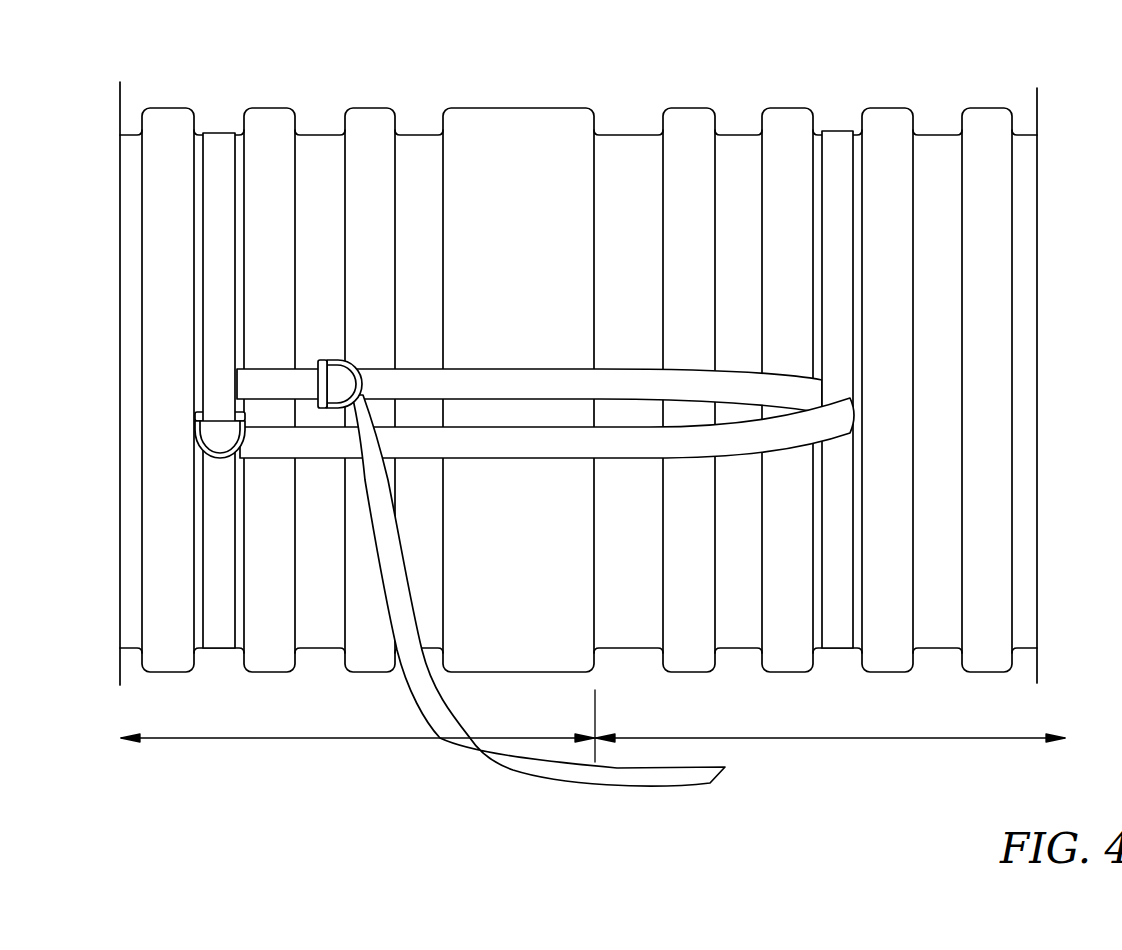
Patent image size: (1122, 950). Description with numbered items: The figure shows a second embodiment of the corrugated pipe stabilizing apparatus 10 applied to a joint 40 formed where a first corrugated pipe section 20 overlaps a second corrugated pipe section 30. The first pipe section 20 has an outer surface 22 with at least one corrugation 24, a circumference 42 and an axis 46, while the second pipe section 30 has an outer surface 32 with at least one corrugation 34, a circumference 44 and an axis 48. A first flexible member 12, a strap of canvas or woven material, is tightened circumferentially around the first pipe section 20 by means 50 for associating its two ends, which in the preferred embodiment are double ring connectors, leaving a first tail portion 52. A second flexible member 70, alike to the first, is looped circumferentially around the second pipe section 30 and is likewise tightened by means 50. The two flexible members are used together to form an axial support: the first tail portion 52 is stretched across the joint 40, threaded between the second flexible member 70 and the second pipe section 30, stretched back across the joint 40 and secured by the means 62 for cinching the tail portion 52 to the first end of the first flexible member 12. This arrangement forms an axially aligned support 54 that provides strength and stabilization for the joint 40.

The corrugated pipe stabilizing apparatus 10 is at (1002, 72).
The first flexible member 12 is at (218, 130).
The first corrugated pipe section 20 is at (368, 140).
The outer surface 22 is at (158, 107).
The corrugation 24 is at (272, 108).
The second corrugated pipe section 30 is at (887, 137).
The outer surface 32 is at (727, 134).
The corrugation 34 is at (795, 105).
The joint 40 is at (595, 132).
The circumference 42 is at (278, 557).
The circumference 44 is at (692, 547).
The axis 46 is at (343, 741).
The axis 48 is at (845, 741).
The means for associating and tightening 50 is at (197, 448).
The first tail portion 52 is at (523, 775).
The axially aligned support 54 is at (580, 452).
The means for cinching 62 is at (350, 362).
The second flexible member 70 is at (853, 305).